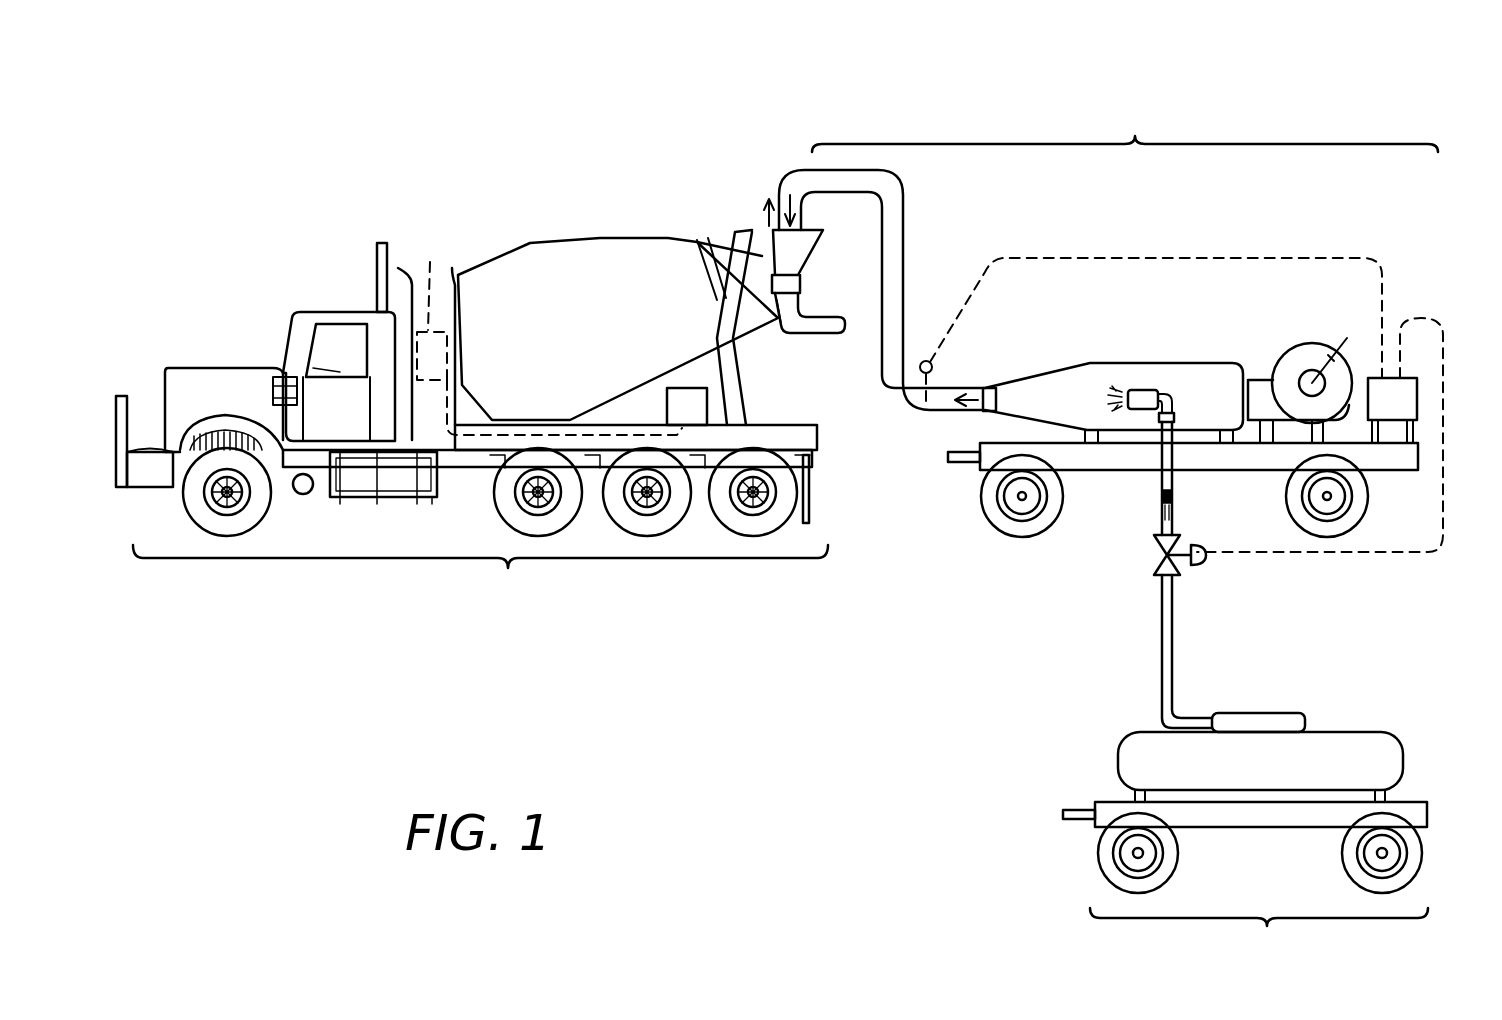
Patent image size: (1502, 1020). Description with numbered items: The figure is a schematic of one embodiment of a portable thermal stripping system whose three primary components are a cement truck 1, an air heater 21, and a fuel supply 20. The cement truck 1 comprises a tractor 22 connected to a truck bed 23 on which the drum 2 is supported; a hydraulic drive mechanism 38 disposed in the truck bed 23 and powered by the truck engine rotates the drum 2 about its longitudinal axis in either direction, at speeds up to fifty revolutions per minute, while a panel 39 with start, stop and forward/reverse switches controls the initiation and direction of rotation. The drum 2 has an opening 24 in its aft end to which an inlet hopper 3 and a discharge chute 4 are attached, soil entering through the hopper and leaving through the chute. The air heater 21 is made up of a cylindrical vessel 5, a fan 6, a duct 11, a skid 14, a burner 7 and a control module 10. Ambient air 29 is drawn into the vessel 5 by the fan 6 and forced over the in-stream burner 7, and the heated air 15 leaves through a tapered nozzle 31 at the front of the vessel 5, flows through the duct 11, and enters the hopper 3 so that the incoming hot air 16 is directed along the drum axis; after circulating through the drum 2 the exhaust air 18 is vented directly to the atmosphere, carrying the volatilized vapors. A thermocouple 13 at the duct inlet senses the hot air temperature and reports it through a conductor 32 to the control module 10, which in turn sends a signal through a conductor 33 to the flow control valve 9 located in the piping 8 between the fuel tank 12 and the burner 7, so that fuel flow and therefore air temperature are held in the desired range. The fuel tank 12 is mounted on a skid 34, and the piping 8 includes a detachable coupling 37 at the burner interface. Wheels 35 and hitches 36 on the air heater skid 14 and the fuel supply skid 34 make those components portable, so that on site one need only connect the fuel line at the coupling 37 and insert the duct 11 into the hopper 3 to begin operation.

The cement truck 1 is at (472, 419).
The drum 2 is at (572, 243).
The inlet hopper 3 is at (795, 248).
The discharge chute 4 is at (840, 330).
The cylindrical vessel 5 is at (1103, 365).
The fan 6 is at (1284, 345).
The burner 7 is at (1142, 390).
The piping 8 is at (1160, 517).
The flow control valve 9 is at (1182, 577).
The control module 10 is at (1420, 390).
The duct 11 is at (880, 178).
The fuel tank 12 is at (1335, 732).
The thermocouple 13 is at (935, 362).
The skid 14 is at (1097, 471).
The hot air 15 is at (995, 388).
The incoming hot air 16 is at (800, 206).
The exhaust air 18 is at (762, 216).
The fuel supply 20 is at (1259, 936).
The air heater 21 is at (1125, 127).
The tractor 22 is at (322, 310).
The truck bed 23 is at (820, 440).
The drum opening 24 is at (777, 326).
The ambient air 29 is at (1347, 338).
The nozzle 31 is at (985, 410).
The conductor 32 is at (1190, 258).
The conductor 33 is at (1356, 552).
The skid 34 is at (1248, 827).
The wheels 35 is at (1018, 535).
The hitches 36 is at (962, 462).
The detachable coupling 37 is at (1176, 414).
The hydraulic drive mechanism 38 is at (431, 262).
The panel 39 is at (708, 405).